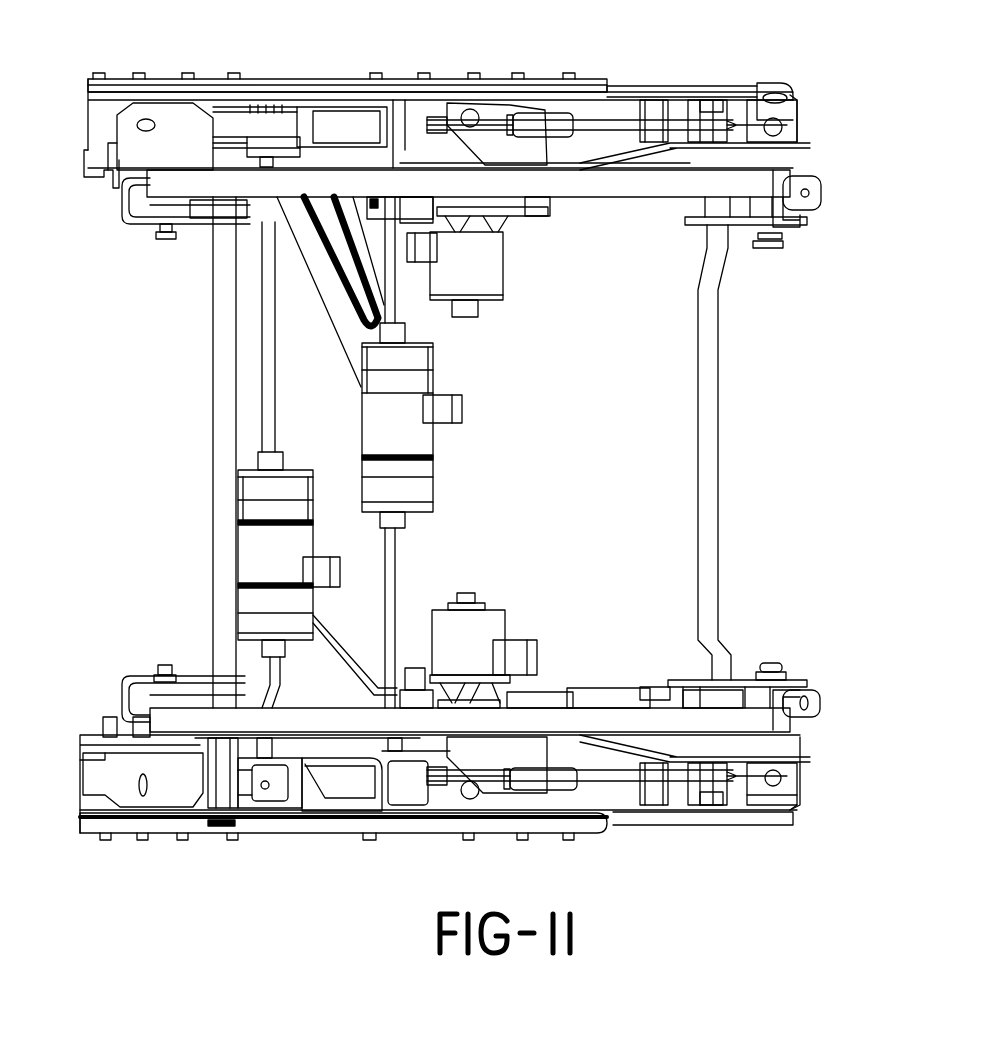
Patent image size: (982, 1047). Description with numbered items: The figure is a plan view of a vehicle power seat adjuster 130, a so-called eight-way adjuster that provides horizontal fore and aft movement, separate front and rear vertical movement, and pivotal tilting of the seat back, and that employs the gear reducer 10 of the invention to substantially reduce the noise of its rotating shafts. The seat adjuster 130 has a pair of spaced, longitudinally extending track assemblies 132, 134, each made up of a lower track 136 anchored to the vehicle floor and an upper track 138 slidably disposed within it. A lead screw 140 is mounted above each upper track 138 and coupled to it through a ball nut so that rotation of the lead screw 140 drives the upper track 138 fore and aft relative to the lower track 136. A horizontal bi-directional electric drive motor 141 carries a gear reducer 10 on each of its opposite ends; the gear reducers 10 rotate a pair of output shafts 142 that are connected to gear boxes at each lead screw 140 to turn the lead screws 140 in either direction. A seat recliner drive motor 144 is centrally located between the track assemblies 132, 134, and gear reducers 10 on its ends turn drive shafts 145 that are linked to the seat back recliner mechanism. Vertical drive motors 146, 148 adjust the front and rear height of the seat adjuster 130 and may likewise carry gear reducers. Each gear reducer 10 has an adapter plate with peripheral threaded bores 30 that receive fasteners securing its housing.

The gear reducer 10 is at (332, 490).
The threaded bores 30 is at (392, 815).
The power seat adjuster 130 is at (388, 28).
The track assembly 132 is at (543, 38).
The track assembly 134 is at (536, 838).
The lower track 136 is at (582, 83).
The upper track 138 is at (693, 83).
The lead screw 140 is at (613, 128).
The horizontal drive motor 141 is at (247, 545).
The output shafts 142 is at (258, 282).
The seat recliner drive motor 144 is at (432, 444).
The drive shafts 145 is at (398, 292).
The vertical drive motor 146 is at (493, 267).
The vertical drive motor 148 is at (498, 623).